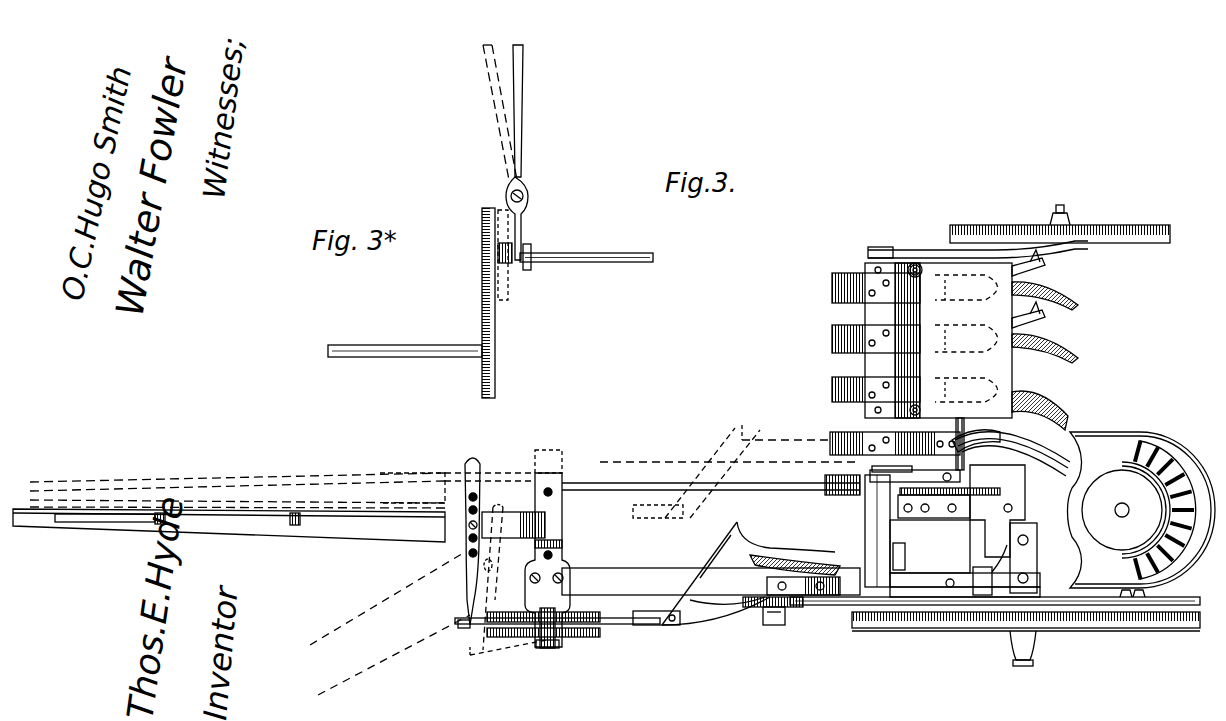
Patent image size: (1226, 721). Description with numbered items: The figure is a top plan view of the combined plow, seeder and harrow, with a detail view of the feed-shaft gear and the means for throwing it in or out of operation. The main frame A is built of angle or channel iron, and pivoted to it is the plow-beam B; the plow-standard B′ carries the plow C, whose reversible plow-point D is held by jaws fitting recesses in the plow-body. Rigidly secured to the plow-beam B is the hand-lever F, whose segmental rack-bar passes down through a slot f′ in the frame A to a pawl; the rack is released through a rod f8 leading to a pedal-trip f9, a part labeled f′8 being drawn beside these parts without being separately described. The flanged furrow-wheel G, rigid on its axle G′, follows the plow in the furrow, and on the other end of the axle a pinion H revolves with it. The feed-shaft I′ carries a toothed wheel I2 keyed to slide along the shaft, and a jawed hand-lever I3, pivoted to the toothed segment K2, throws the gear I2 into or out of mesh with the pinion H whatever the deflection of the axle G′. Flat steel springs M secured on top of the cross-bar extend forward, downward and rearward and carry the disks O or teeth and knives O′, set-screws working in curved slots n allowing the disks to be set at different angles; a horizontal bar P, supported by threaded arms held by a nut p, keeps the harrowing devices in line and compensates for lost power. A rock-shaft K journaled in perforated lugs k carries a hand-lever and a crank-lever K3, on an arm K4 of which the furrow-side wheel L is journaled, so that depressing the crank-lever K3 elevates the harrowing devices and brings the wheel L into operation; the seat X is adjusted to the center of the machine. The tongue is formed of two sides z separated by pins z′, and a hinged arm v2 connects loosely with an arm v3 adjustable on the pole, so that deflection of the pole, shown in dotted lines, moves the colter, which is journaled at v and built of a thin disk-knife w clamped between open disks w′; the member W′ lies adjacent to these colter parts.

In FIG. 3, the tongue side z is at (279, 515).
In FIG. 3, the tongue pin z′ is at (191, 522).
In FIG. 3, the colter journal v is at (480, 554).
In FIG. 3, the hinged arm v2 is at (432, 655).
In FIG. 3, the adjustable arm v3 is at (387, 598).
In FIG. 3, the disk-knife w is at (557, 633).
In FIG. 3, the open disk w′ is at (555, 638).
In FIG. 3, the rack W′ is at (543, 635).
In FIG. 3, the reversible plow-point D is at (604, 549).
In FIG. 3, the plow-beam B is at (711, 510).
In FIG. 3, the plow-standard B′ is at (805, 610).
In FIG. 3, the plow C is at (751, 573).
In FIG. 3, the toothed segment K2 is at (932, 526).
In FIG. 3, the horizontal bar P is at (905, 365).
In FIG. 3, the flat steel spring M is at (877, 364).
The rock-shaft K is at (498, 303).
In FIG. 3, the rock-shaft K is at (855, 240).
In FIG. 3, the curved slot n is at (913, 262).
In FIG. 3, the crank-lever K3 is at (915, 218).
In FIG. 3, the furrow-side wheel L is at (1085, 262).
In FIG. 3, the crank-lever arm K4 is at (1035, 200).
In FIG. 3, the disk O is at (1053, 306).
In FIG. 3, the tooth or knife O′ is at (1023, 422).
In FIG. 3, the pinion H is at (1012, 458).
In FIG. 3, the perforated lug k is at (943, 444).
In FIG. 3, the seat X is at (1142, 510).
In FIG. 3, the main frame A is at (965, 531).
In FIG. 3, the rod f8 is at (906, 555).
In FIG. 3, the pedal-trip f9 is at (990, 567).
In FIG. 3, the screw f′8 is at (1035, 595).
In FIG. 3, the slot f′ is at (1150, 588).
In FIG. 3, the hand-lever F is at (1005, 600).
In FIG. 3, the furrow-wheel G is at (1026, 639).
The feed-shaft I′ is at (586, 246).
In FIG. 3, the feed-shaft I′ is at (951, 444).
The toothed wheel I2 is at (480, 252).
The jawed hand-lever I3 is at (512, 112).
The nut p is at (546, 251).
The axle G′ is at (405, 363).